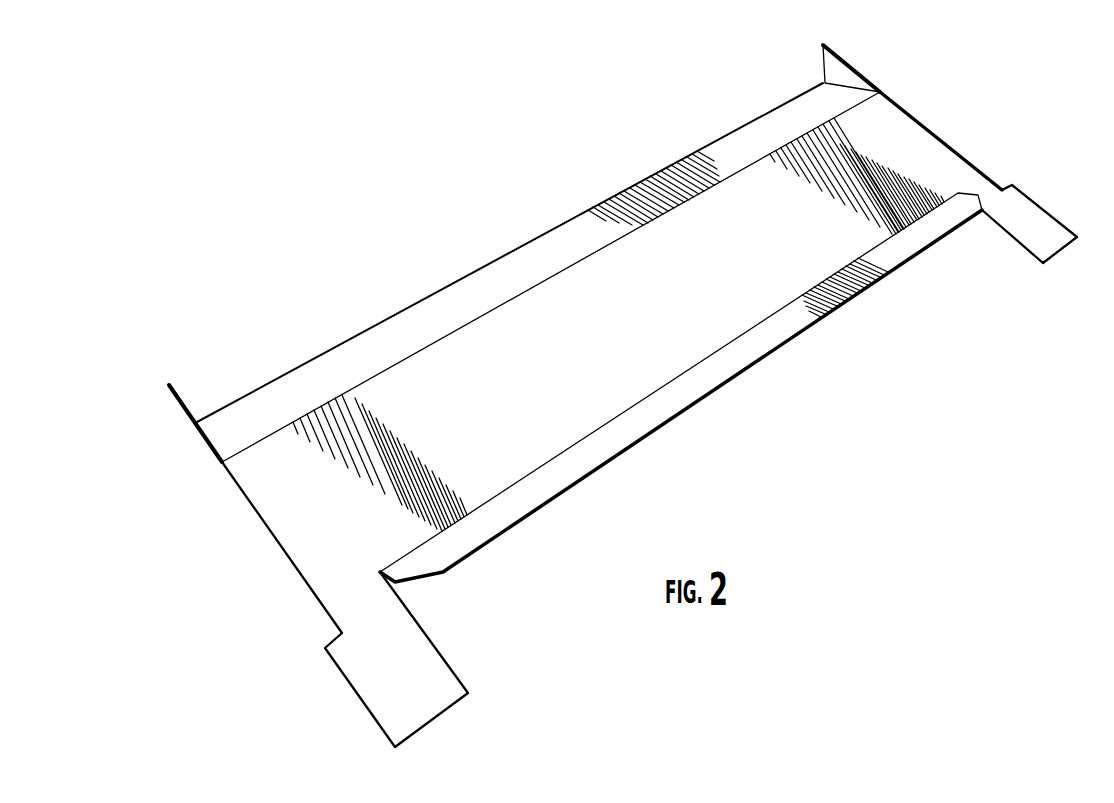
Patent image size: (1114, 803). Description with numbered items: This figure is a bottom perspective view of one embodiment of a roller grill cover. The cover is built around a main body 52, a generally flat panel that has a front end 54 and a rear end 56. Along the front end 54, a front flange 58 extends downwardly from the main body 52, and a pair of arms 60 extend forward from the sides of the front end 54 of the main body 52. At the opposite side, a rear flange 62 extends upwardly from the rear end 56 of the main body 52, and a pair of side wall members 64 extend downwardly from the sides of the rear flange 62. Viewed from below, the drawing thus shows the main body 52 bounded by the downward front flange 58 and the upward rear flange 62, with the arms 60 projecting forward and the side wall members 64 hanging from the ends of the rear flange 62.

The main body 52 is at (638, 348).
The front end 54 is at (742, 337).
The rear end 56 is at (426, 347).
The front flange 58 is at (497, 515).
The arms 60 is at (410, 677).
The rear flange 62 is at (562, 247).
The side wall members 64 is at (183, 400).